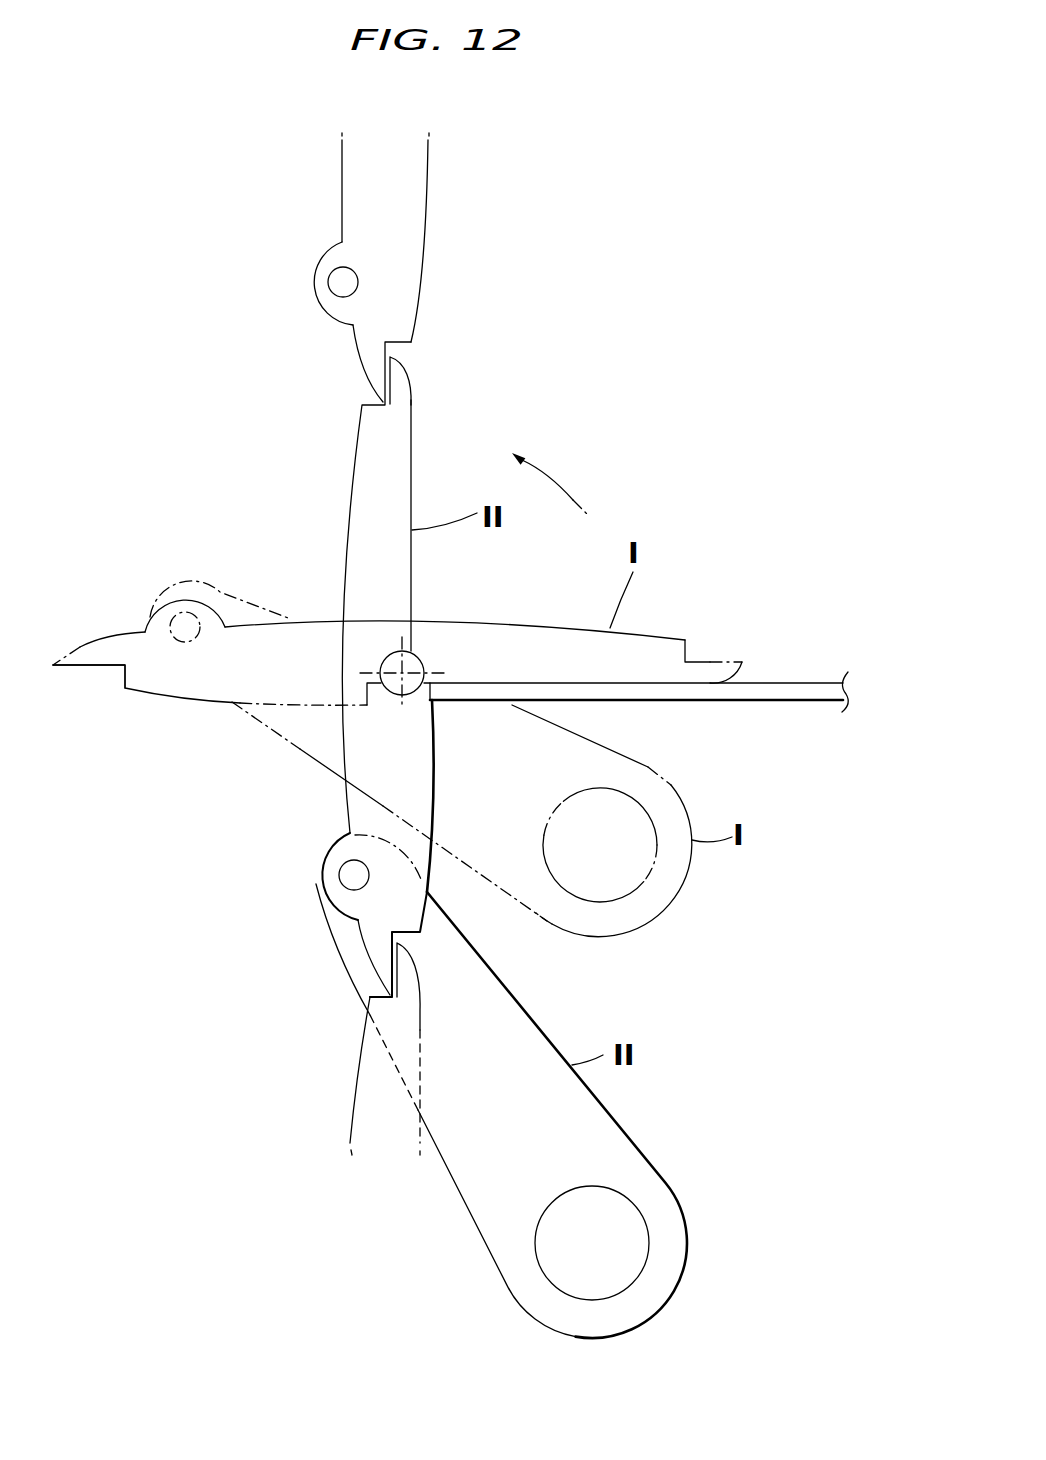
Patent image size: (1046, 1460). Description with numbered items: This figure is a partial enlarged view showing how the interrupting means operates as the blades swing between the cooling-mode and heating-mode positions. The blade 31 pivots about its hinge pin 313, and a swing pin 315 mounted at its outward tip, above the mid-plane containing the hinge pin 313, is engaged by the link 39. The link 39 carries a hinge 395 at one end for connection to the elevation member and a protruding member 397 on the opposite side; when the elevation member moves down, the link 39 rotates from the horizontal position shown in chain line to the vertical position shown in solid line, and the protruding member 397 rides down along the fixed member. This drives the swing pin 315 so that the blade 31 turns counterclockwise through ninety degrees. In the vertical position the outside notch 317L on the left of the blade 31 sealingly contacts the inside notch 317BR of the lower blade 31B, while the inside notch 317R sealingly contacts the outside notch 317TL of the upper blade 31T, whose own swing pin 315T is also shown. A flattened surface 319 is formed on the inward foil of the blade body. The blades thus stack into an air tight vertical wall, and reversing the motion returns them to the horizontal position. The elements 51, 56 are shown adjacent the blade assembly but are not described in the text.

The blade 31 is at (345, 462).
The upper blade 31T is at (319, 267).
The lower blade 31B is at (415, 994).
The hinge pin 313 is at (415, 663).
The swing pin 315 is at (178, 620).
The swing pin of upper blade 315T is at (338, 282).
The outside notch 317L is at (95, 667).
The inside notch 317R is at (400, 390).
The outside notch of upper blade 317TL is at (387, 364).
The inside notch of lower blade 317BR is at (400, 980).
The flattened surface 319 is at (412, 445).
The link 39 is at (519, 1037).
The hinge 395 is at (605, 1080).
The protruding member 397 is at (617, 1293).
The plate 51 is at (652, 726).
The plate 56 is at (812, 697).